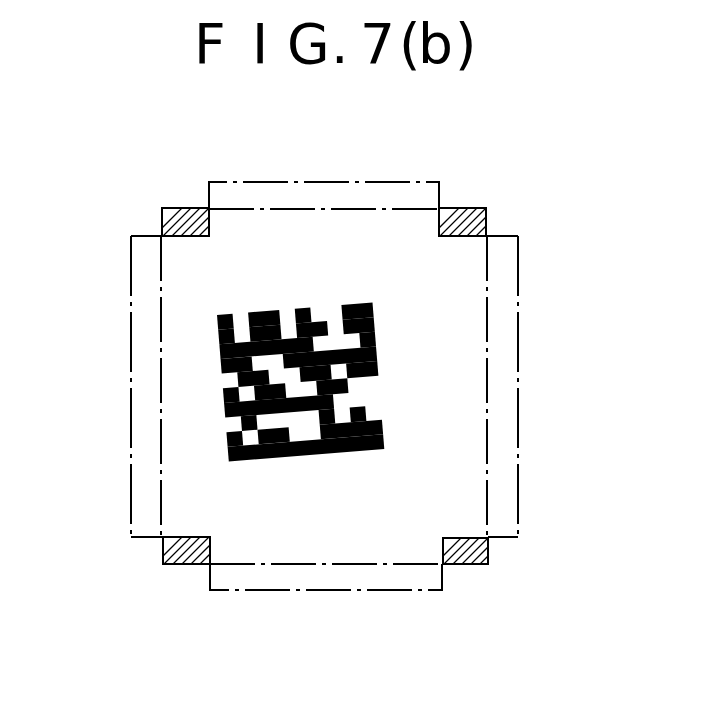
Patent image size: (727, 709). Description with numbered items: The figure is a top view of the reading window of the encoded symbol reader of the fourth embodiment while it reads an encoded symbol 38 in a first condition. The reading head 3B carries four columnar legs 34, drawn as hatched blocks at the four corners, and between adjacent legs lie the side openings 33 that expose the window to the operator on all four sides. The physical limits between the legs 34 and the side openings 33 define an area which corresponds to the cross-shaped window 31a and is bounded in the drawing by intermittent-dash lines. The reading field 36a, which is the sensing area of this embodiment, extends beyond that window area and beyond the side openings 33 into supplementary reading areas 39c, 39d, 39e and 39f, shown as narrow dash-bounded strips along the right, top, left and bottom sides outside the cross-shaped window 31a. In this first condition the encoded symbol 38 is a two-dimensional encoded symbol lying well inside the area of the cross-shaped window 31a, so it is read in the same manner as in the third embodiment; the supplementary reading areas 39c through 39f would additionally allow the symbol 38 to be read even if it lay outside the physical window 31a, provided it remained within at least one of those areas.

The reading head 3B is at (163, 552).
The cross-shaped window 31a is at (485, 306).
The side openings 33 is at (347, 236).
The columnar legs 34 is at (187, 208).
The reading field 36a is at (519, 483).
The encoded symbol 38 is at (225, 412).
The supplementary reading area 39c is at (510, 520).
The supplementary reading area 39d is at (272, 200).
The supplementary reading area 39e is at (140, 486).
The supplementary reading area 39f is at (265, 573).